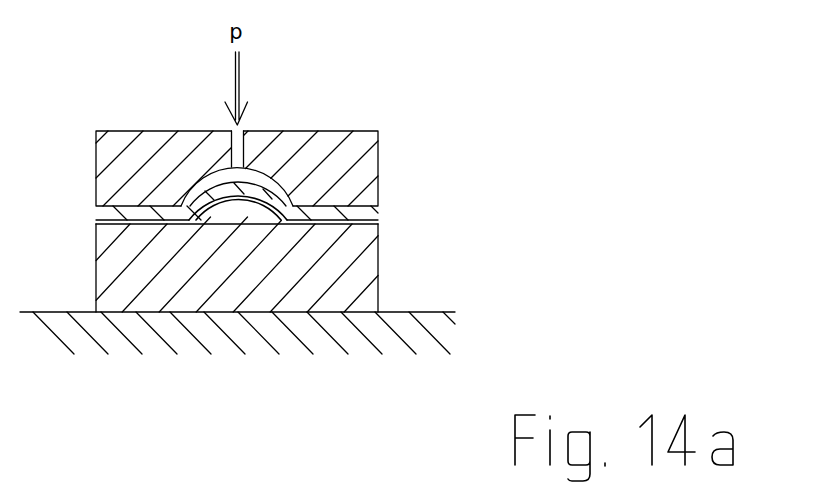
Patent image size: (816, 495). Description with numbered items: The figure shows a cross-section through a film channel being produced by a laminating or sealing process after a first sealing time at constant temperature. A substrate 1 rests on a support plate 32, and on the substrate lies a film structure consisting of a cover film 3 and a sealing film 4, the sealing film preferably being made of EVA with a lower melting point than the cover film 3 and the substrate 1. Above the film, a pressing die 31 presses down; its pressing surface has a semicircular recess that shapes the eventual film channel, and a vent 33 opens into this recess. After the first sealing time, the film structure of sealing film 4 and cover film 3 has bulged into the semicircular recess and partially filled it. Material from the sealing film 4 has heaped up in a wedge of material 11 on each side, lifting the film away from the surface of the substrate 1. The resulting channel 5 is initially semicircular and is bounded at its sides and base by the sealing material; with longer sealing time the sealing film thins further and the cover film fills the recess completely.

The substrate 1 is at (357, 280).
The cover film 3 is at (360, 215).
The sealing film 4 is at (377, 220).
The channel 5 is at (242, 217).
The wedge of material 11 is at (283, 217).
The pressing die 31 is at (357, 160).
The support plate 32 is at (92, 325).
The vent 33 is at (238, 162).